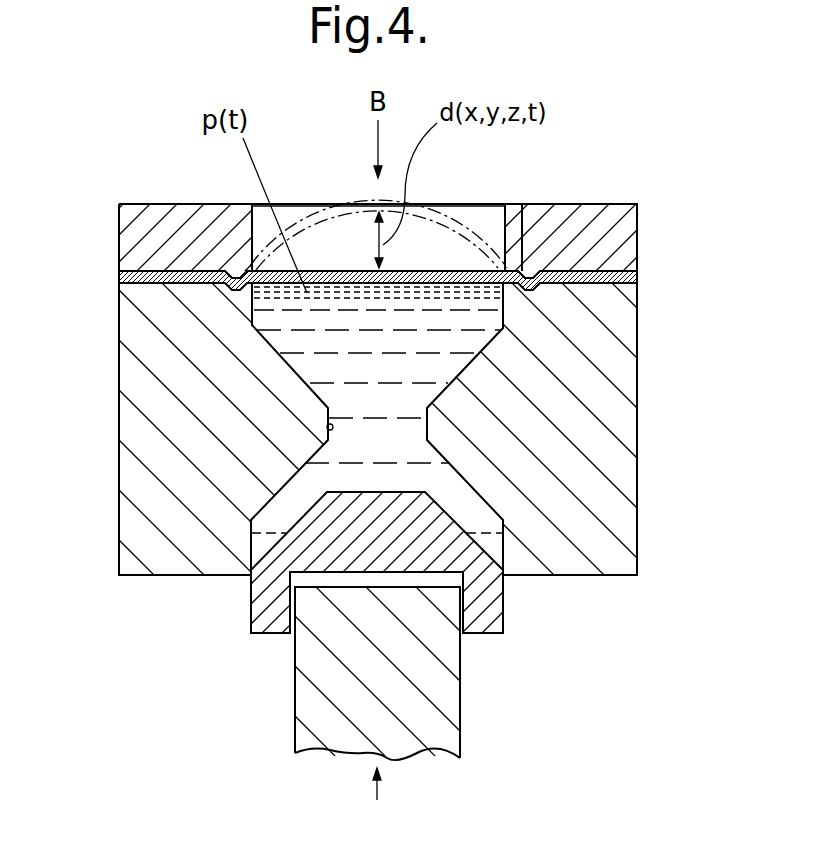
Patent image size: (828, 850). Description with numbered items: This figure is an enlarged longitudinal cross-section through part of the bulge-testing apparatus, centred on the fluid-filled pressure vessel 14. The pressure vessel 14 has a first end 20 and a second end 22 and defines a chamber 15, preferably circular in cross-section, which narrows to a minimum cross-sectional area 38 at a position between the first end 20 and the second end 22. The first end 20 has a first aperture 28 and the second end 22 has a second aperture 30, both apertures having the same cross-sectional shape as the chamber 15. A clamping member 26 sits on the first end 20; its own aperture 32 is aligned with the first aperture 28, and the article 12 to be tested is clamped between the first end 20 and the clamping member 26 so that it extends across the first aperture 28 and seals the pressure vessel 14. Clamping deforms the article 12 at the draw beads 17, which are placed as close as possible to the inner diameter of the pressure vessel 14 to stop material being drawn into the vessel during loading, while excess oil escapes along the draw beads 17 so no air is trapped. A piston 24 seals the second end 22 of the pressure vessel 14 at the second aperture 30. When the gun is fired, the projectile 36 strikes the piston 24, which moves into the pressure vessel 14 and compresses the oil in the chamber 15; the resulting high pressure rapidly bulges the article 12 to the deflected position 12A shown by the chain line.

The article 12 is at (160, 272).
The position of the article 12A is at (301, 220).
The pressure vessel 14 is at (575, 476).
The chamber 15 is at (448, 368).
The draw beads 17 is at (228, 271).
The first end 20 is at (165, 321).
The second end 22 is at (132, 543).
The piston 24 is at (490, 632).
The clamping member 26 is at (577, 224).
The first aperture 28 is at (488, 290).
The second aperture 30 is at (493, 545).
The aperture 32 is at (473, 210).
The projectile 36 is at (318, 703).
The minimum cross-sectional area 38 is at (325, 426).